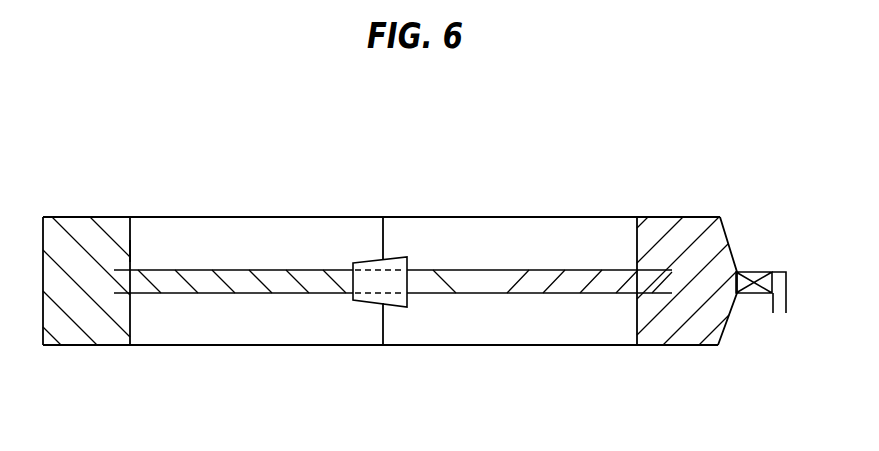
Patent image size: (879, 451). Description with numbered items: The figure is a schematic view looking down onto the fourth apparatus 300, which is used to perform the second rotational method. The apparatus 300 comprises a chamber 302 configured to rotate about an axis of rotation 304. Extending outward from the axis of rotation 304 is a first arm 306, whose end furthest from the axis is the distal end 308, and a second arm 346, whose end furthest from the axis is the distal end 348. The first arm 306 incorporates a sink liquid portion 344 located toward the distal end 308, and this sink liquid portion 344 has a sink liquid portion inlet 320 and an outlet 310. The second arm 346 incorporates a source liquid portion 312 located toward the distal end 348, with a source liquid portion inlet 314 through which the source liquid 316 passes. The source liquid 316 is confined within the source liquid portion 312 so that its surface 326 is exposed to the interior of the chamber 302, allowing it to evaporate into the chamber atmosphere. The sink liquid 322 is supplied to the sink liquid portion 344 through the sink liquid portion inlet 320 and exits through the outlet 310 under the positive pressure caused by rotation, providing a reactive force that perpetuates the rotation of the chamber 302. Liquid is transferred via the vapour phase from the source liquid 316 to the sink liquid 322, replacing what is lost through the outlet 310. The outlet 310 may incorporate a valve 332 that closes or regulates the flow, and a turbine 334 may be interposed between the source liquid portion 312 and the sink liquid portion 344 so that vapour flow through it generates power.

The apparatus 300 is at (423, 172).
The chamber 302 is at (322, 244).
The axis of rotation 304 is at (459, 280).
The first arm 306 is at (575, 217).
The distal end 308 is at (730, 231).
The outlet 310 is at (780, 313).
The source liquid portion 312 is at (85, 217).
The source liquid portion inlet 314 is at (250, 293).
The source liquid 316 is at (73, 330).
The sink liquid portion inlet 320 is at (528, 293).
The sink liquid 322 is at (667, 330).
The surface of the source liquid 326 is at (130, 247).
The valve 332 is at (737, 271).
The turbine 334 is at (372, 264).
The sink liquid portion 344 is at (668, 217).
The second arm 346 is at (213, 217).
The distal end 348 is at (105, 217).